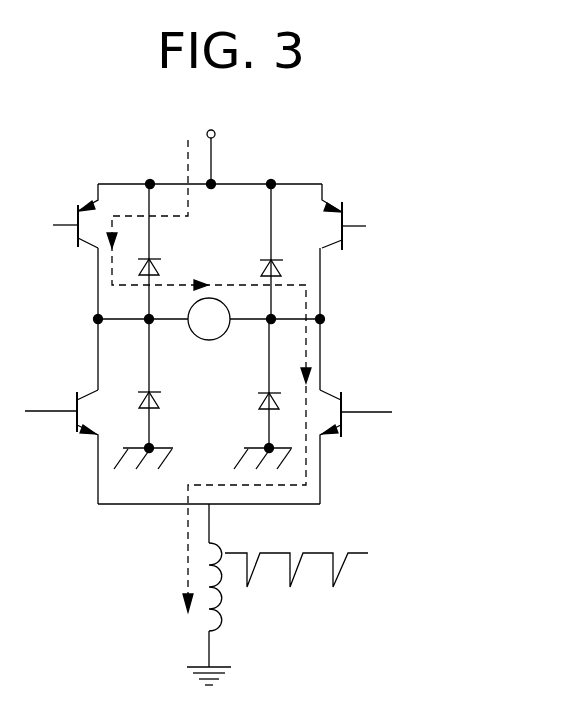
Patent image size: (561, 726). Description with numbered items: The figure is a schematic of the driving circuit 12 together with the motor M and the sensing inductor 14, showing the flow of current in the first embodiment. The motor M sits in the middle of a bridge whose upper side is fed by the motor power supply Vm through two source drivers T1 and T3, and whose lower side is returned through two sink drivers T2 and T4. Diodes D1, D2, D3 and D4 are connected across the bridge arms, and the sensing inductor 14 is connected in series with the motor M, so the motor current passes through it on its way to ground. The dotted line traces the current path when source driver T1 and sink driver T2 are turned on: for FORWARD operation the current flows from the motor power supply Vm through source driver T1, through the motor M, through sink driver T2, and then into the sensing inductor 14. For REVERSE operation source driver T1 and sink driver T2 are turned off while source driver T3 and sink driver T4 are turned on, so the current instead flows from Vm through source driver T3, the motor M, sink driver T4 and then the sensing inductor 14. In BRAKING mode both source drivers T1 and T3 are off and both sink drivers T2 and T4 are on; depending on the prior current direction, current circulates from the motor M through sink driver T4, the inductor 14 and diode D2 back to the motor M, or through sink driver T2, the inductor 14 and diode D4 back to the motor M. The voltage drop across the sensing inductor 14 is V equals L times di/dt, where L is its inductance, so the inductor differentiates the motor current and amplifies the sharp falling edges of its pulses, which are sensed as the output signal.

The driving circuit 12 is at (259, 356).
The sensing inductor 14 is at (287, 596).
The source driver T1 is at (73, 210).
The sink driver T2 is at (356, 432).
The source driver T3 is at (346, 211).
The sink driver T4 is at (61, 432).
The diode D1 is at (163, 251).
The diode D2 is at (262, 394).
The diode D3 is at (257, 251).
The diode D4 is at (151, 394).
The motor M is at (209, 319).
The inductance L is at (225, 585).
The motor power supply Vm is at (212, 142).